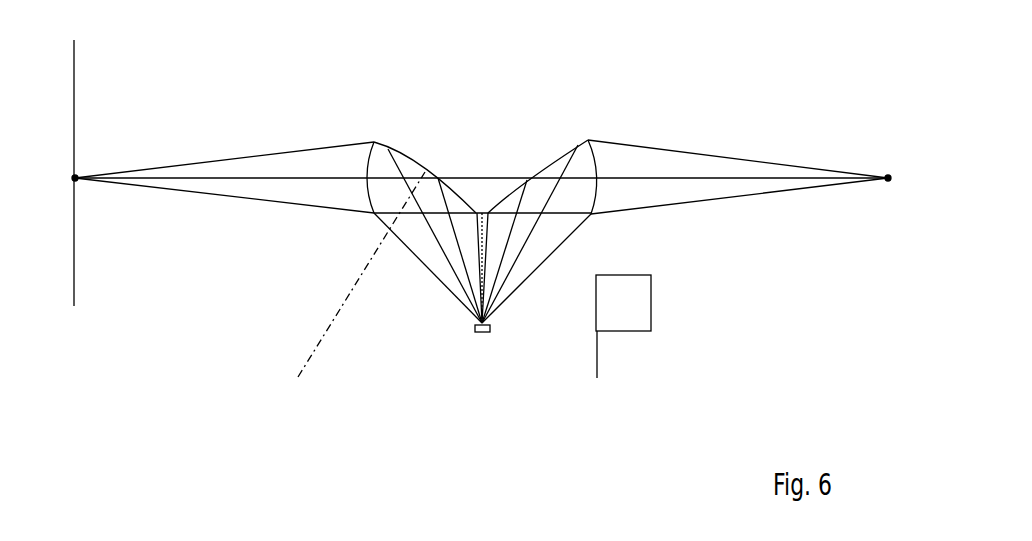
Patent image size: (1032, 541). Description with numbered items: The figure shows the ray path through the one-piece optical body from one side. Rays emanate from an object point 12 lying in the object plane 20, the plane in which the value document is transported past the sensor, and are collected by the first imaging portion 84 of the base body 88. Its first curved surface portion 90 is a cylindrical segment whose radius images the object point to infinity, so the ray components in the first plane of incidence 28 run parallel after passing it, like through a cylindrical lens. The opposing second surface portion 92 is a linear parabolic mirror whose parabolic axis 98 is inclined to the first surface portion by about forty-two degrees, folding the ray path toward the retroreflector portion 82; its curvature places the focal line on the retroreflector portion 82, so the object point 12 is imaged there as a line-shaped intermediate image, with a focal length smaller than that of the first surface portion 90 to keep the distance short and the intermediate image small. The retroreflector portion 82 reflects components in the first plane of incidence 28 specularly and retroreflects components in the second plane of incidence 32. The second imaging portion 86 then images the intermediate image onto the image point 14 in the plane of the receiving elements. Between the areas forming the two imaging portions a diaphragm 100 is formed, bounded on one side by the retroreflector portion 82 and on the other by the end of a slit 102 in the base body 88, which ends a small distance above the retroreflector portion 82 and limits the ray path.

The object plane 20 is at (74, 75).
The object point 12 is at (75, 177).
The image point 14 is at (888, 177).
The first curved surface portion 90 is at (367, 160).
The second surface portion 92 is at (427, 160).
The first imaging portion 84 is at (405, 153).
The slit 102 is at (482, 210).
The second imaging portion 86 is at (573, 128).
The base body 88 is at (573, 257).
The parabolic axis 98 is at (320, 338).
The diaphragm 100 is at (470, 319).
The retroreflector portion 82 is at (478, 333).
The second plane of incidence 32 is at (596, 321).
The first plane of incidence 28 is at (595, 337).